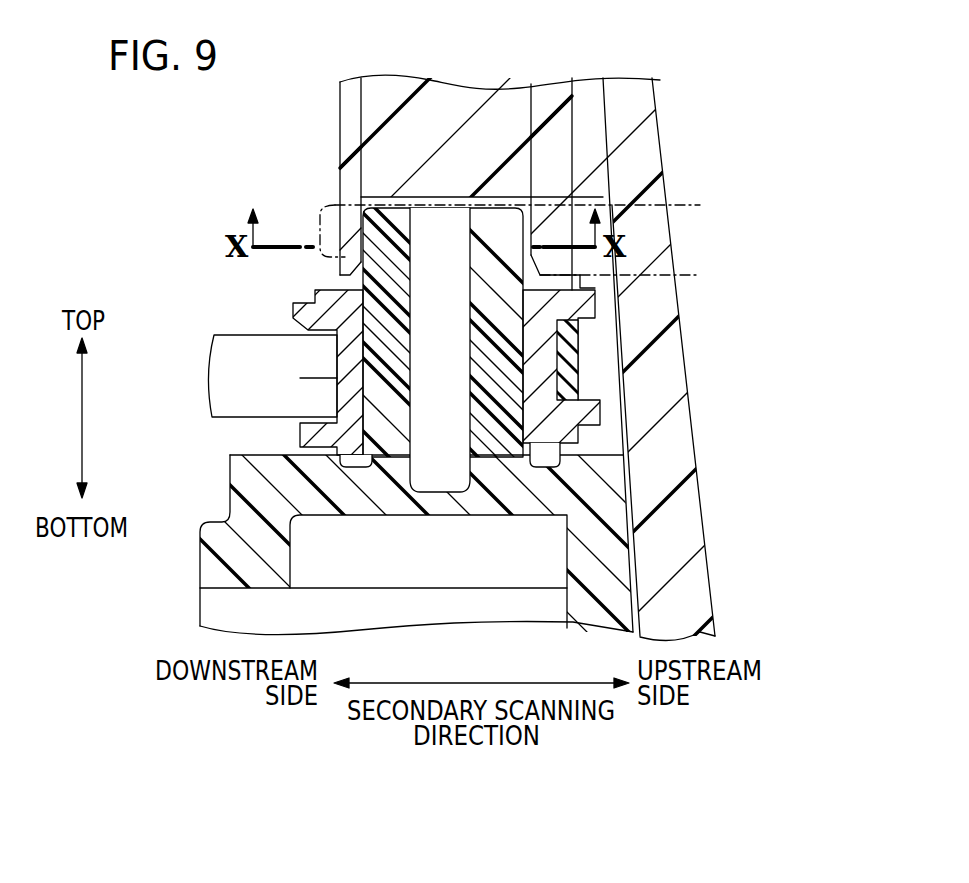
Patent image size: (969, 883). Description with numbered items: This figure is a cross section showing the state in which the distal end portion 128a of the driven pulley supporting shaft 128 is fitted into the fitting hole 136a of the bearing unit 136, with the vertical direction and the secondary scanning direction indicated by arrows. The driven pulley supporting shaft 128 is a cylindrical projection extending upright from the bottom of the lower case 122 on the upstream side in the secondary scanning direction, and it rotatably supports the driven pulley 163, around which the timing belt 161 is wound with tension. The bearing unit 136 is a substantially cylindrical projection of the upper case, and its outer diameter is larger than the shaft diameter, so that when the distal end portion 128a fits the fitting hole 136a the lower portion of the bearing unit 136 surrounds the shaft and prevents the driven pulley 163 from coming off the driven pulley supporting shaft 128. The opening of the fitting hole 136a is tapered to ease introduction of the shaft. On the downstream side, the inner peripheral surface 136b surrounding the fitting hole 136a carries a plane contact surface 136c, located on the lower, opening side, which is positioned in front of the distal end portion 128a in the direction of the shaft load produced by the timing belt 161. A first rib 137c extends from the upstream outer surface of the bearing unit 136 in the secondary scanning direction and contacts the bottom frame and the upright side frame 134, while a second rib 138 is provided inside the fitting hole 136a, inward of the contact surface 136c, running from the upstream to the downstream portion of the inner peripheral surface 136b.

The lower case 122 is at (598, 538).
The driven pulley supporting shaft 128 is at (513, 357).
The distal end portion 128a is at (703, 206).
The side frame 134 is at (650, 130).
The bearing unit 136 is at (340, 150).
The fitting hole 136a is at (354, 282).
The inner peripheral surface 136b is at (372, 118).
The contact surface 136c is at (318, 230).
The first rib 137c is at (590, 85).
The second rib 138 is at (445, 90).
The timing belt 161 is at (220, 377).
The driven pulley 163 is at (337, 382).